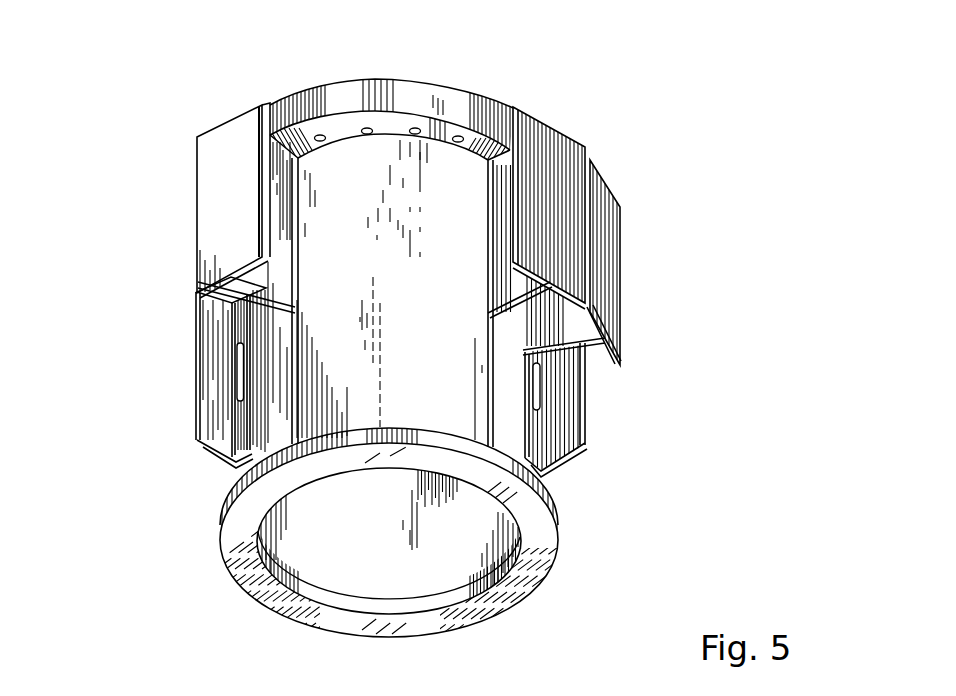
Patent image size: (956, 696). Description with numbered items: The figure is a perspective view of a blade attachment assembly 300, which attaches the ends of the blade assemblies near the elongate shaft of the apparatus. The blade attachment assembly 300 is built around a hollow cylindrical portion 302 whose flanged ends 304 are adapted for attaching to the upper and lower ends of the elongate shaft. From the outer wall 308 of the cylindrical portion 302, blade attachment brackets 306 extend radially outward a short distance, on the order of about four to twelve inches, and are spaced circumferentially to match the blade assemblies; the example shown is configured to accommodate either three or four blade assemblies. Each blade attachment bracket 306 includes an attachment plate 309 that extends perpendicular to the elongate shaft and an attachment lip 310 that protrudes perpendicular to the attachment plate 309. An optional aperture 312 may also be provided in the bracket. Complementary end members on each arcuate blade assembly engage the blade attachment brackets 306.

The blade attachment assembly 300 is at (402, 349).
The hollow cylindrical portion 302 is at (450, 538).
The flanged ends 304 is at (317, 95).
The blade attachment bracket 306 is at (226, 120).
The outer wall 308 is at (445, 341).
The attachment plate 309 is at (283, 110).
The attachment lip 310 is at (212, 192).
The aperture 312 is at (238, 388).